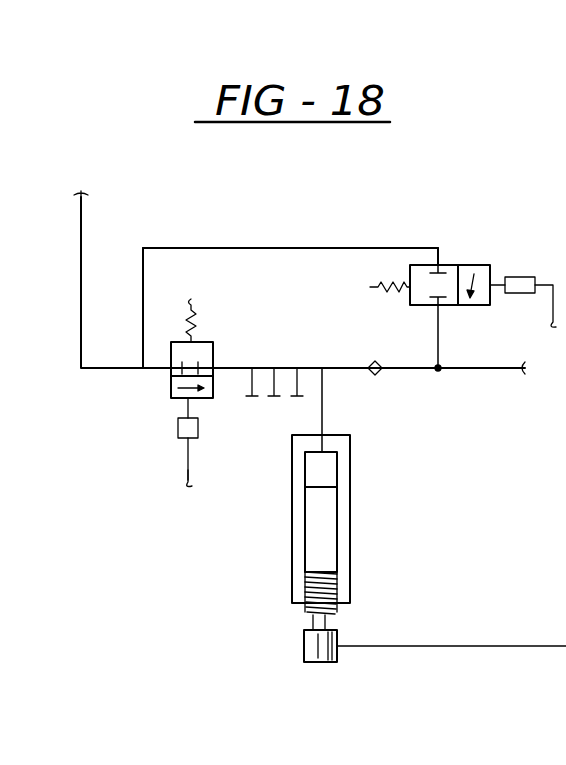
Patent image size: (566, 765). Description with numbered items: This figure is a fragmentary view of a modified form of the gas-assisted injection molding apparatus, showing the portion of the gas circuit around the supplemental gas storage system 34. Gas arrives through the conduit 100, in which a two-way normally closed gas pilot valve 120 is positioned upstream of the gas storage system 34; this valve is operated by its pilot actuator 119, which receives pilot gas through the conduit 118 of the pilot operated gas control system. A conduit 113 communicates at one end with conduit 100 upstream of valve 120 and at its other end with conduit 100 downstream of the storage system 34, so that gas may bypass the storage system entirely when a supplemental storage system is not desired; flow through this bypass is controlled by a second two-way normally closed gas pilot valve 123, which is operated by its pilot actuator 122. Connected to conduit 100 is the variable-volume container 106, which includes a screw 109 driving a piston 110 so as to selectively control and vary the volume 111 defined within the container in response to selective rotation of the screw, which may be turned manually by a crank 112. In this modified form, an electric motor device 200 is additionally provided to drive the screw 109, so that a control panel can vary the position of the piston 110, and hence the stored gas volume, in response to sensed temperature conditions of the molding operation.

The gas storage system 34 is at (230, 583).
The conduit 100 is at (81, 250).
The container 106 is at (350, 500).
The screw 109 is at (340, 612).
The piston 110 is at (330, 535).
The volume 111 is at (325, 472).
The crank 112 is at (323, 418).
The conduit 113 is at (332, 248).
The conduit 118 is at (185, 468).
The pilot actuator 119 is at (178, 425).
The two-way gas pilot valve 120 is at (222, 350).
The pilot actuator 122 is at (521, 277).
The two-way gas pilot valve 123 is at (466, 262).
The electric motor device 200 is at (304, 650).